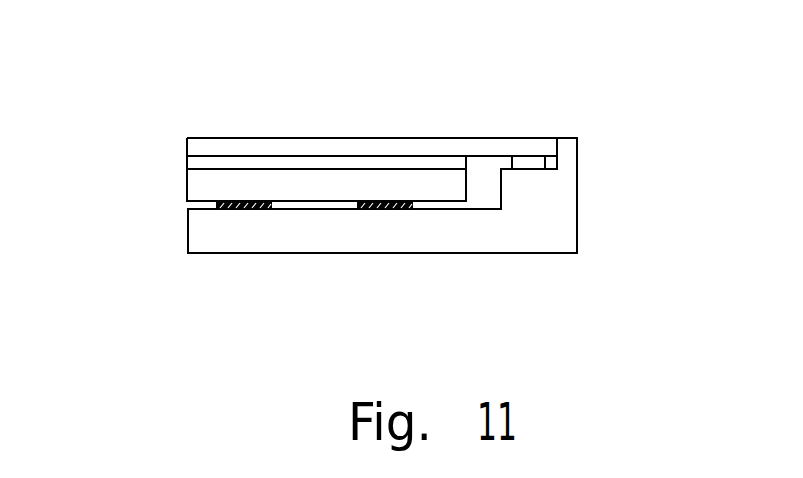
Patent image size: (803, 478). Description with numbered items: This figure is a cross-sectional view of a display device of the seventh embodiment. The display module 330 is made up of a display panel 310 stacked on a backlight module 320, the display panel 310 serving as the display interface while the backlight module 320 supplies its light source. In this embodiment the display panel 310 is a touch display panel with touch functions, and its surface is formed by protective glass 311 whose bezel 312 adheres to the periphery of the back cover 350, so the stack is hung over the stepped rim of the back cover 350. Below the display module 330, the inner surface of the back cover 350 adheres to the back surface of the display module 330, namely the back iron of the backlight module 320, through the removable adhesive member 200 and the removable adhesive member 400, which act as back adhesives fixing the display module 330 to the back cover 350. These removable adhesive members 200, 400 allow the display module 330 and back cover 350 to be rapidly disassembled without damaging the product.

The display panel 310 is at (179, 123).
The protective glass 311 is at (187, 145).
The bezel 312 is at (535, 137).
The backlight module 320 is at (187, 193).
The display module 330 is at (92, 135).
The back cover 350 is at (573, 230).
The removable adhesive member 200 is at (235, 208).
The removable adhesive member 400 is at (390, 210).